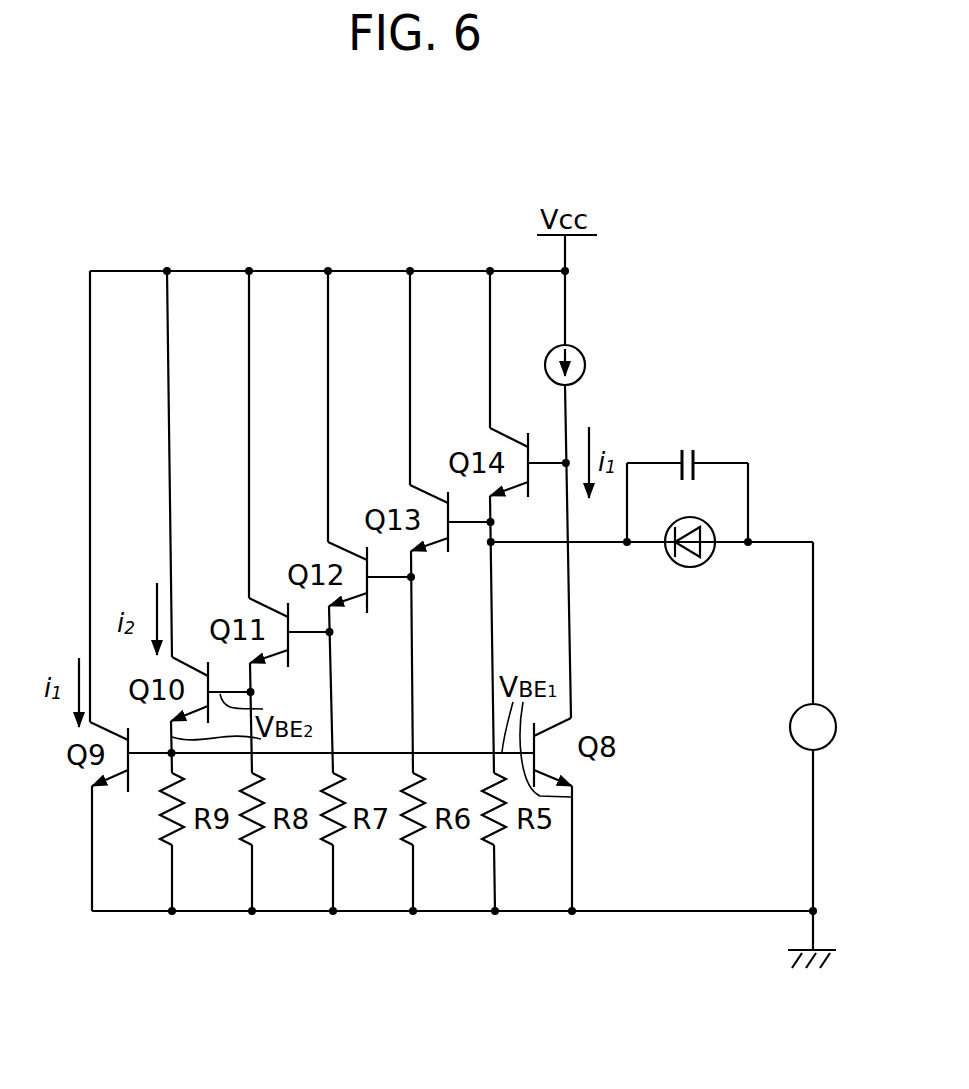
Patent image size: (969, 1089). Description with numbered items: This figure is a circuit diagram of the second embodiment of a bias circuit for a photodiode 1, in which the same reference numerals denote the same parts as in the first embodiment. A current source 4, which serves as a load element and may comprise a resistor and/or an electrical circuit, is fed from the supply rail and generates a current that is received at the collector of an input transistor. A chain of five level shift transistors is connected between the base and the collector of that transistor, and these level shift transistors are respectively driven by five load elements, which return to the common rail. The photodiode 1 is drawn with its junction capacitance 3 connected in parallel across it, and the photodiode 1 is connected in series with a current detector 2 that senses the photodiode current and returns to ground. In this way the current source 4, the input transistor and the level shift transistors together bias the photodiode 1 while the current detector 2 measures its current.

The photodiode 1 is at (688, 568).
The current detector 2 is at (790, 724).
The junction capacitance 3 is at (694, 450).
The current source 4 is at (585, 356).